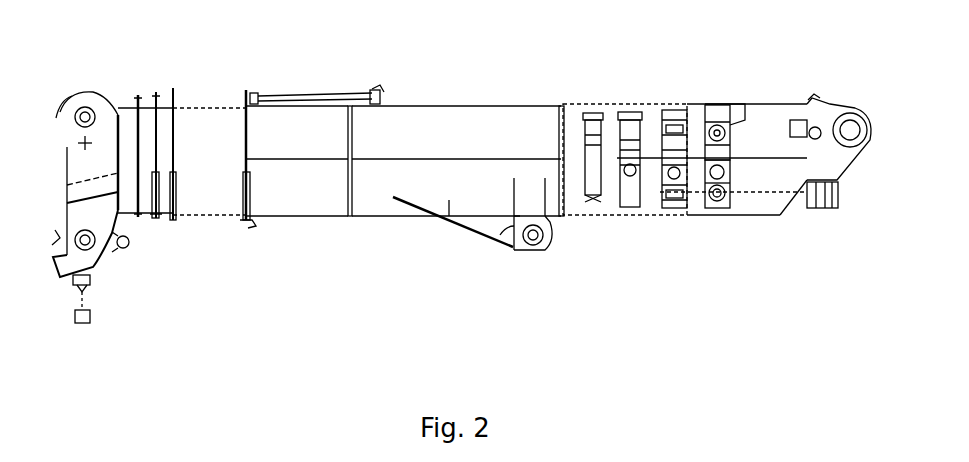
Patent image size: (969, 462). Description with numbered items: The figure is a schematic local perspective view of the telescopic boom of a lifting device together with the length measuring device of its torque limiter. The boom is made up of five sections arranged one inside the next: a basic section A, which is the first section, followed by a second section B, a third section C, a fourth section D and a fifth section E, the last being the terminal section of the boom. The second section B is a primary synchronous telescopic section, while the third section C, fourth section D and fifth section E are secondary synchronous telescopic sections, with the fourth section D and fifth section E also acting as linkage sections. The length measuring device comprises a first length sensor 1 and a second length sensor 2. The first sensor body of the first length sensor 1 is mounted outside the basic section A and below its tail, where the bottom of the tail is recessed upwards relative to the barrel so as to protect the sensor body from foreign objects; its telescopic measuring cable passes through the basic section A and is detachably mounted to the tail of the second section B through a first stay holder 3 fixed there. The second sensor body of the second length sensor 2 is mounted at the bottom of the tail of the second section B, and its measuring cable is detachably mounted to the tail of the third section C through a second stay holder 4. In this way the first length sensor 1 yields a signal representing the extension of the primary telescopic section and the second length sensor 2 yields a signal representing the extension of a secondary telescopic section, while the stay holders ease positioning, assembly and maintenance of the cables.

The basic section A is at (517, 120).
The second section B is at (202, 125).
The third section C is at (158, 97).
The fourth section D is at (138, 95).
The fifth section E is at (98, 88).
The first length sensor 1 is at (827, 208).
The second length sensor 2 is at (712, 210).
The first stay holder 3 is at (727, 210).
The second stay holder 4 is at (667, 210).